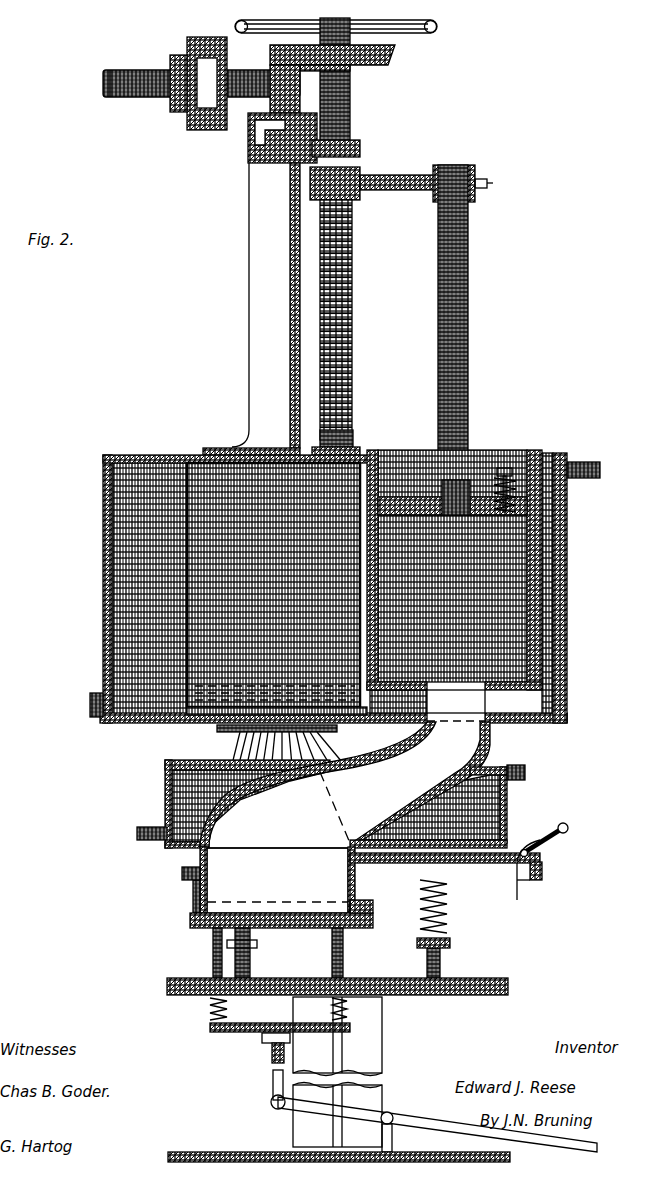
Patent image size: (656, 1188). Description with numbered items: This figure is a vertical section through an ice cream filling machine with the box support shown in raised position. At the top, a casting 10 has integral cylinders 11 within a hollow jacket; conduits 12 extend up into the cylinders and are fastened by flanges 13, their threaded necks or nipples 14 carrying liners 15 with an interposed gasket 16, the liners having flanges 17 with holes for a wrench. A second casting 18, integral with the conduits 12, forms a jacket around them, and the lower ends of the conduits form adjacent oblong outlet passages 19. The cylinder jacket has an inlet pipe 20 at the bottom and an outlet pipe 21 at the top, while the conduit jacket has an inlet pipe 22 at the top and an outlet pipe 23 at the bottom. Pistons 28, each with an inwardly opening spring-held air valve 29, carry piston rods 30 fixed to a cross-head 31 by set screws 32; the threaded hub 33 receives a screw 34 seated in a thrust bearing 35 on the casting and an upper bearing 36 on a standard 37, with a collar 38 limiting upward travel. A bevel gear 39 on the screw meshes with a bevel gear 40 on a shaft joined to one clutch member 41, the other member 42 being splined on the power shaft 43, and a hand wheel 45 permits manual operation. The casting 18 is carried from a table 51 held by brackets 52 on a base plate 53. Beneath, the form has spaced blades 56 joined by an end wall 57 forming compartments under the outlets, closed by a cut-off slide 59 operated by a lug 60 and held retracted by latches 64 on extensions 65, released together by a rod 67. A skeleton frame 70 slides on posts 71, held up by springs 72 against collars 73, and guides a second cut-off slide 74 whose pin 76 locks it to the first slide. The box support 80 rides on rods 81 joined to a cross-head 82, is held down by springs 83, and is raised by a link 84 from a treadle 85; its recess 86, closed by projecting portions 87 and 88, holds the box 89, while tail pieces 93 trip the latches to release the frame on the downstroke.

The casting 10 is at (567, 515).
The cylinders 11 is at (540, 578).
The conduits 12 is at (236, 742).
The flanges 13 is at (520, 728).
The necks or nipples 14 is at (456, 705).
The liners 15 is at (545, 610).
The gasket 16 is at (478, 728).
The flanges 17 is at (534, 469).
The casting 18 is at (507, 805).
The outlet or discharge passages 19 is at (280, 848).
The inlet pipe 20 is at (90, 705).
The outlet pipe 21 is at (600, 470).
The inlet pipe 22 is at (525, 772).
The outlet pipe 23 is at (137, 833).
The pistons 28 is at (488, 490).
The air valve 29 is at (510, 475).
The piston rods 30 is at (468, 315).
The cross-head 31 is at (380, 190).
The set screws 32 is at (493, 183).
The hub 33 is at (360, 172).
The screw 34 is at (352, 300).
The thrust bearing 35 is at (355, 447).
The bearing 36 is at (350, 110).
The standard 37 is at (249, 248).
The collar 38 is at (360, 148).
The bevel gear 39 is at (395, 50).
The bevel gear 40 is at (258, 160).
The friction clutch member 41 is at (212, 130).
The friction clutch member 42 is at (190, 128).
The shaft 43 is at (140, 100).
The hand wheel 45 is at (437, 27).
The table 51 is at (508, 987).
The brackets 52 is at (382, 1040).
The base plate 53 is at (339, 1148).
The blades 56 is at (277, 880).
The end wall 57 is at (200, 893).
The cut-off slide 59 is at (470, 853).
The lug 60 is at (542, 875).
The latches 64 is at (568, 830).
The extensions 65 is at (530, 855).
The rod 67 is at (568, 826).
The skeleton frame 70 is at (182, 874).
The rods or posts 71 is at (213, 960).
The springs 72 is at (447, 920).
The collars 73 is at (450, 942).
The cut-off slide 74 is at (520, 882).
The pin 76 is at (534, 839).
The box sustaining support or table 80 is at (300, 928).
The vertical rods 81 is at (343, 950).
The cross-head 82 is at (245, 1032).
The springs 83 is at (210, 1010).
The link 84 is at (273, 1080).
The treadle 85 is at (410, 1118).
The recess 86 is at (365, 918).
The projecting portion 87 is at (190, 918).
The projecting portions 88 is at (352, 905).
The ice cream box or receptacle 89 is at (193, 885).
The tail pieces 93 is at (257, 948).